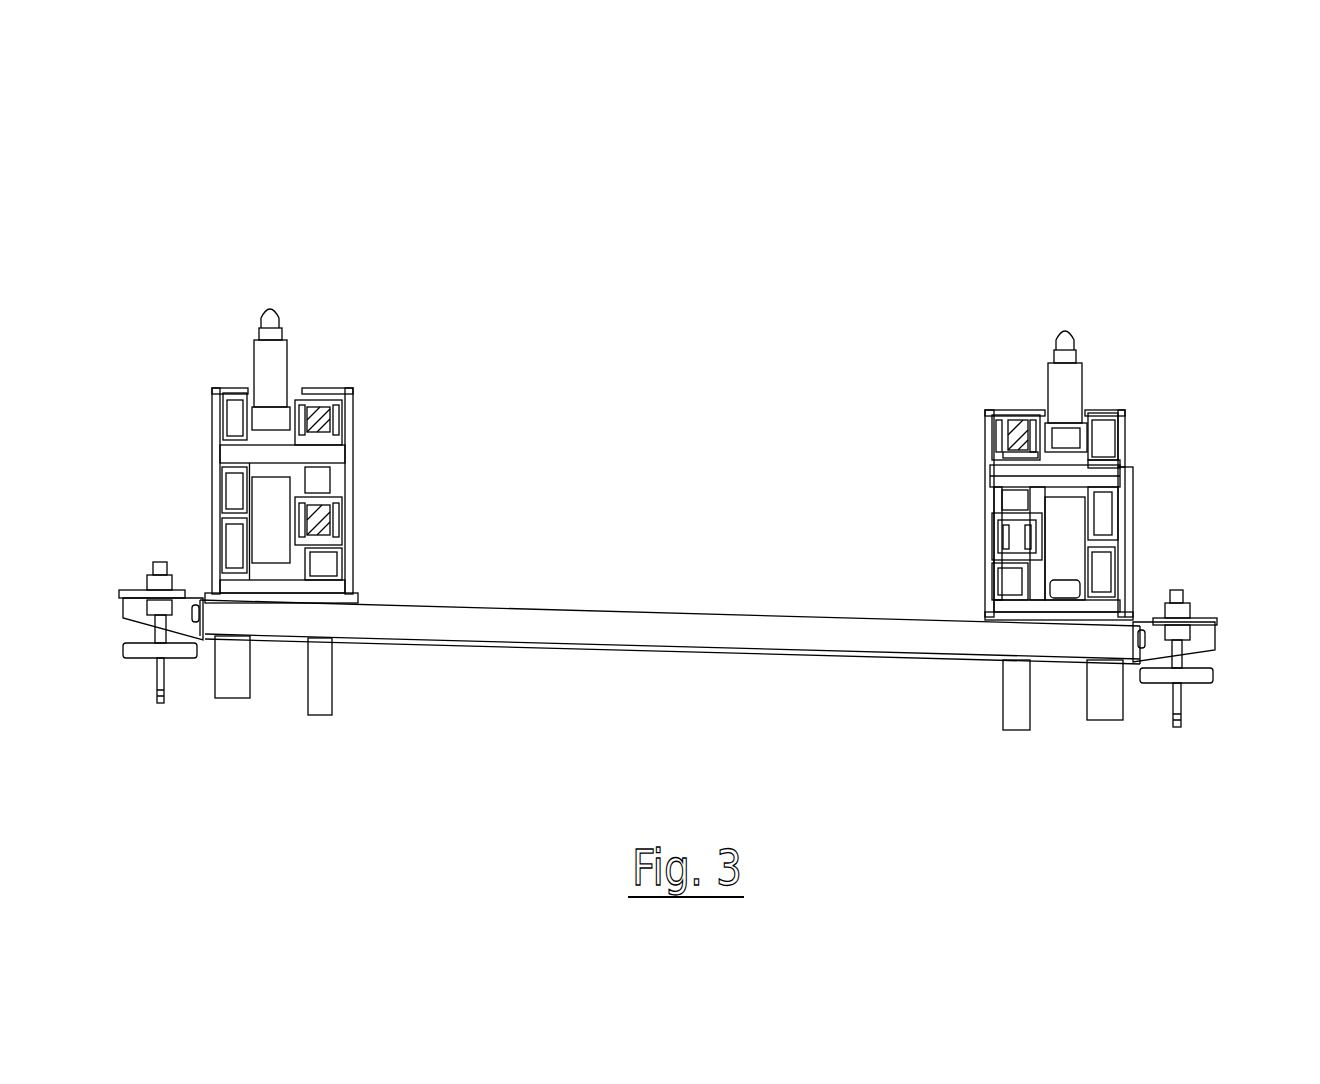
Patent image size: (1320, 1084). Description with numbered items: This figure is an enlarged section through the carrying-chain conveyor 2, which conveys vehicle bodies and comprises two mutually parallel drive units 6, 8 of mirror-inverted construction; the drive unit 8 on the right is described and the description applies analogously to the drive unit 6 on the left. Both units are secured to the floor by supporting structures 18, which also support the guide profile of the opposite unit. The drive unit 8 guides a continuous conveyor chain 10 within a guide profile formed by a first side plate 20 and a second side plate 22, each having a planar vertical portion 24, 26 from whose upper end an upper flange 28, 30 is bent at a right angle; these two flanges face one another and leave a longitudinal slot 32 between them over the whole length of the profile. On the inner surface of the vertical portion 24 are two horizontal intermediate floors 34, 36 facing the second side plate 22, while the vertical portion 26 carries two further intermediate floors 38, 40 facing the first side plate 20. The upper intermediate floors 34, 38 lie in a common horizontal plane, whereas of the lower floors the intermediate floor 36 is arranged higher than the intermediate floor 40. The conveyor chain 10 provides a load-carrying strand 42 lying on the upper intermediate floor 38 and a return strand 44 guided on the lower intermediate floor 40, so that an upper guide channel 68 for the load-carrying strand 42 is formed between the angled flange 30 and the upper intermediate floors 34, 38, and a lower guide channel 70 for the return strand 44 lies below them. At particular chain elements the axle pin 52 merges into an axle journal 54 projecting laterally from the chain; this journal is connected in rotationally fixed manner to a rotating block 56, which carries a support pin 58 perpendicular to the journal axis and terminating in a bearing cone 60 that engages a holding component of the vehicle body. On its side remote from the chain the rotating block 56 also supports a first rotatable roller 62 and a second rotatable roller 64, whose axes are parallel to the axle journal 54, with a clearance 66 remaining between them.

The carrying-chain conveyor 2 is at (703, 210).
The drive unit 6 is at (338, 232).
The drive unit 8 is at (1128, 247).
The conveyor chain 10 is at (972, 437).
The supporting structure 18 is at (517, 647).
The first side plate 20 is at (970, 502).
The second side plate 22 is at (1105, 480).
The vertical portion 24 is at (983, 525).
The vertical portion 26 is at (1133, 512).
The upper flange 28 is at (1033, 420).
The upper flange 30 is at (1095, 440).
The longitudinal slot 32 is at (1073, 437).
The intermediate floor 34 is at (983, 468).
The intermediate floor 36 is at (983, 580).
The intermediate floor 38 is at (1100, 470).
The intermediate floor 40 is at (1112, 548).
The load-carrying strand 42 is at (1038, 418).
The return strand 44 is at (1007, 603).
The axle pin 52 is at (984, 428).
The axle journal 54 is at (1052, 438).
The rotating block 56 is at (1080, 428).
The support pin 58 is at (1030, 360).
The bearing cone 60 is at (1062, 372).
The first rotatable roller 62 is at (1095, 450).
The second rotatable roller 64 is at (1100, 575).
The clearance 66 is at (1138, 658).
The upper guide channel 68 is at (1098, 420).
The lower guide channel 70 is at (1055, 555).